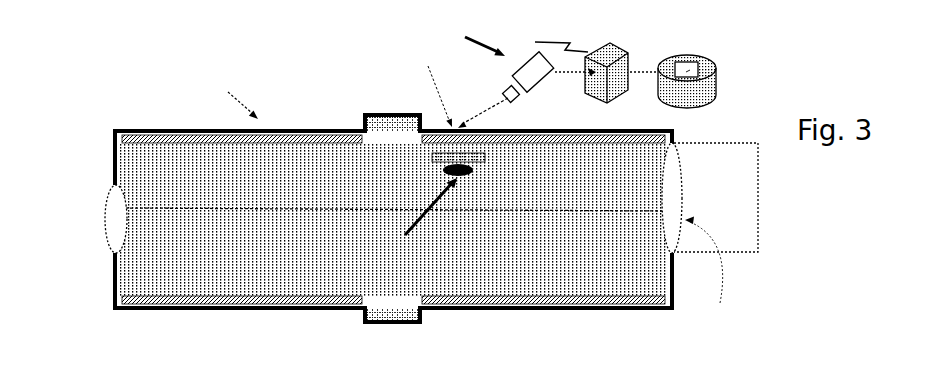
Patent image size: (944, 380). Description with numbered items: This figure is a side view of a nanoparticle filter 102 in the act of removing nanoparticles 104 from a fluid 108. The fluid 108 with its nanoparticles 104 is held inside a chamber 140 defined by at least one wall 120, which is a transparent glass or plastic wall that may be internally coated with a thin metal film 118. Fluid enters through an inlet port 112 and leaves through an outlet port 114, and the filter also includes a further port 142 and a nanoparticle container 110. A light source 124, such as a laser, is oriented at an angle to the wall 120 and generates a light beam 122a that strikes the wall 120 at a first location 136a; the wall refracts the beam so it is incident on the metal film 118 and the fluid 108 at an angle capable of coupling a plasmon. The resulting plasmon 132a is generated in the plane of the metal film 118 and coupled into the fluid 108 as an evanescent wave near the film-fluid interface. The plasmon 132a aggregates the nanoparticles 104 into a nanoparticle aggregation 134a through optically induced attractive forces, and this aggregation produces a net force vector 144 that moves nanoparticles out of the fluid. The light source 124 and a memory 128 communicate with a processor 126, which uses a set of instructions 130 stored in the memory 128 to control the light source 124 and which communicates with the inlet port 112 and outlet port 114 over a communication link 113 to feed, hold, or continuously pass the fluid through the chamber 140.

The nanoparticle filter 102 is at (877, 223).
The nanoparticles 104 is at (758, 251).
The fluid 108 is at (610, 212).
The nanoparticle container 110 is at (747, 183).
The inlet port 112 is at (403, 115).
The communication link 113 is at (580, 47).
The outlet port 114 is at (383, 319).
The metal film 118 is at (297, 143).
The wall 120 is at (320, 128).
The light beam 122a is at (468, 104).
The light source 124 is at (537, 90).
The processor 126 is at (620, 100).
The memory 128 is at (710, 105).
The set of instructions 130 is at (706, 56).
The plasmon 132a is at (432, 155).
The nanoparticle aggregation 134a is at (477, 170).
The first location 136a is at (430, 89).
The chamber 140 is at (231, 100).
The port 142 is at (104, 222).
The net force vector 144 is at (432, 207).